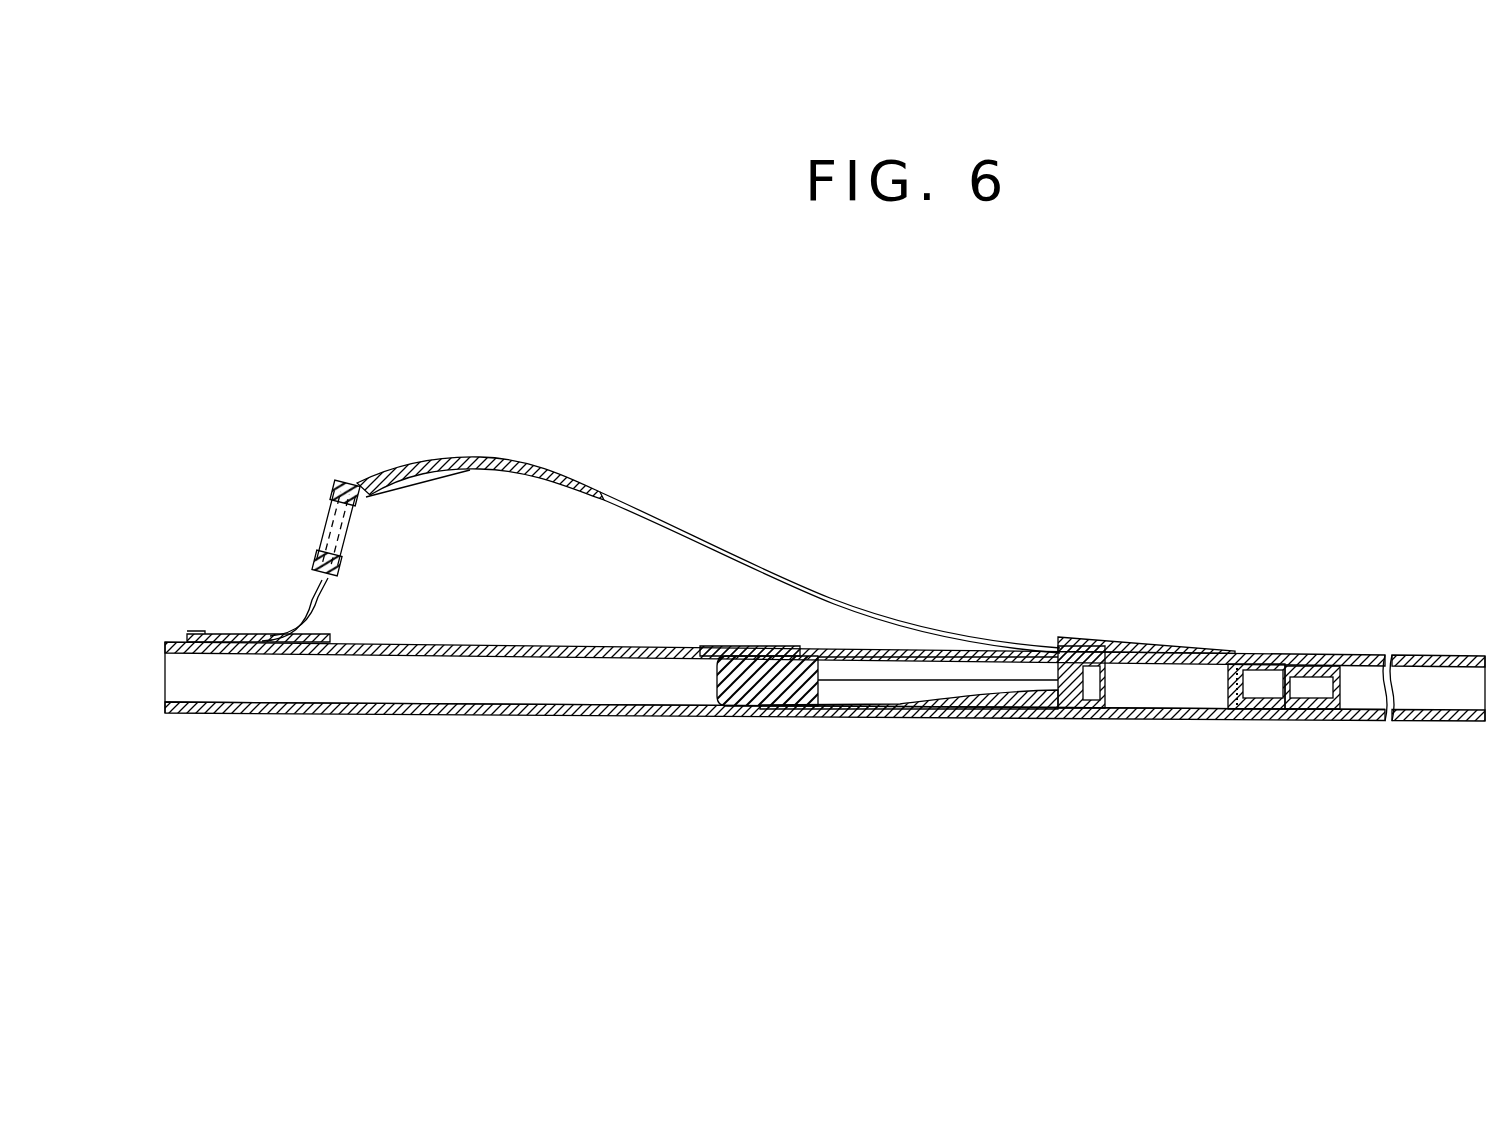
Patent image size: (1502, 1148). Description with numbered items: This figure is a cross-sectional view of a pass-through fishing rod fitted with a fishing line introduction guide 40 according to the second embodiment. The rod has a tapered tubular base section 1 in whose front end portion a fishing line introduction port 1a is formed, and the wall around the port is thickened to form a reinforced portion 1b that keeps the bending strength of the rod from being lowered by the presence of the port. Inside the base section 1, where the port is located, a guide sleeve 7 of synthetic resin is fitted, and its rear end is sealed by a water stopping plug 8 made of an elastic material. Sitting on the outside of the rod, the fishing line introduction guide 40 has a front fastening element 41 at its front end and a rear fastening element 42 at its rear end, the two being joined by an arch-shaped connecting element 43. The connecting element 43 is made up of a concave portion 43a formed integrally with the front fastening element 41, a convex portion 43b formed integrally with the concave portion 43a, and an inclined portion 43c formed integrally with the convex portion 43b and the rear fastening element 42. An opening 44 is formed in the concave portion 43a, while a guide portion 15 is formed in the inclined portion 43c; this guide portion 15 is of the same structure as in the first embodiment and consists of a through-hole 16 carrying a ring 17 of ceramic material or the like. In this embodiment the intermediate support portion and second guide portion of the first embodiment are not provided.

The base section 1 is at (1322, 653).
The fishing line introduction port 1a is at (893, 657).
The reinforced portion 1b is at (458, 718).
The guide sleeve 7 is at (908, 714).
The water stopping plug 8 is at (735, 690).
The guide portion 15 is at (327, 487).
The through-hole 16 is at (340, 573).
The ring 17 is at (345, 485).
The fishing line introduction guide 40 is at (742, 483).
The front fastening element 41 is at (1165, 645).
The rear fastening element 42 is at (228, 633).
The connecting element 43 is at (708, 501).
The concave portion 43a is at (688, 522).
The convex portion 43b is at (485, 462).
The inclined portion 43c is at (308, 588).
The opening 44 is at (795, 590).